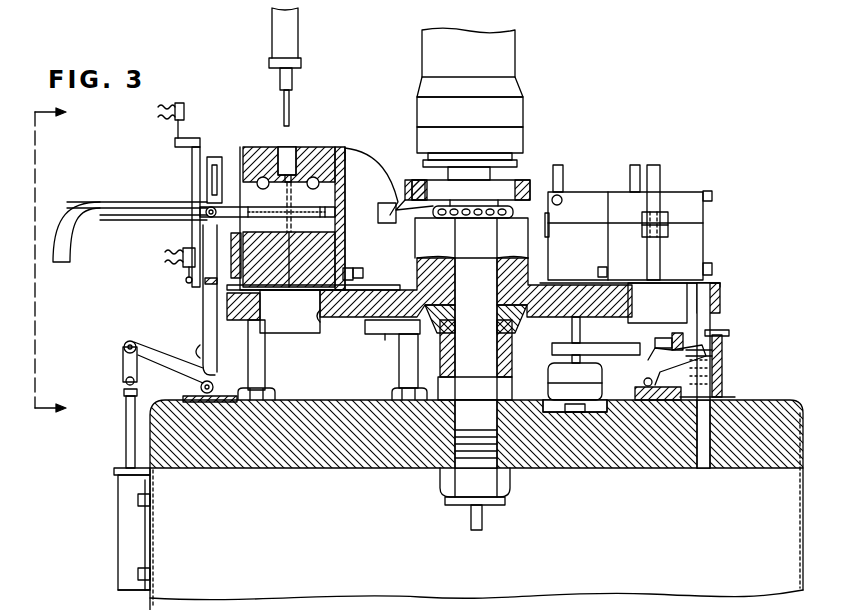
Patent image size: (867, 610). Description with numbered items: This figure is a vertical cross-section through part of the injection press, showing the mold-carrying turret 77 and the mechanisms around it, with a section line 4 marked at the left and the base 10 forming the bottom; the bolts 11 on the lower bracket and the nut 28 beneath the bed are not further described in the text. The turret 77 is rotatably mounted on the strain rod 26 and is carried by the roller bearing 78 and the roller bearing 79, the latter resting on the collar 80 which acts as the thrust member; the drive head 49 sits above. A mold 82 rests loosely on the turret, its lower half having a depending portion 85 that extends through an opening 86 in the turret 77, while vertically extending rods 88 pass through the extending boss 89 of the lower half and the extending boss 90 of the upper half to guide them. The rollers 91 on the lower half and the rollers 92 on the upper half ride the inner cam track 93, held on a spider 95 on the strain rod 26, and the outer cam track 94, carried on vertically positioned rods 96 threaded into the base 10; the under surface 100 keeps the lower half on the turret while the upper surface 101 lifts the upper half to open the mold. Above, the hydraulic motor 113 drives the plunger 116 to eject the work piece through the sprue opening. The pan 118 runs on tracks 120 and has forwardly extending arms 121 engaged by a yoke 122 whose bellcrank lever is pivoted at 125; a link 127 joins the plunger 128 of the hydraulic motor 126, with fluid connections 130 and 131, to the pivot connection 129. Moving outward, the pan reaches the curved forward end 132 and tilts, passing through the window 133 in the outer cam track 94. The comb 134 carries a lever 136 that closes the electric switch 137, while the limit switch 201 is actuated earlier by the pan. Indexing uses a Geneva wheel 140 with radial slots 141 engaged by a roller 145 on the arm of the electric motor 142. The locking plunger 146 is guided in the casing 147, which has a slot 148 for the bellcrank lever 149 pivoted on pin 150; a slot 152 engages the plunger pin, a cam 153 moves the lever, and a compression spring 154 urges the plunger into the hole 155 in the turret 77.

The section line 4- 4 is at (57, 261).
The base 10 is at (327, 408).
The bolts 11 is at (150, 508).
The strain rod 26 is at (512, 374).
The lower nut 28 is at (510, 485).
The motor 49 is at (515, 52).
The turret 77 is at (720, 298).
The roller bearing 78 is at (513, 212).
The roller bearing 79 is at (515, 318).
The collar 80 is at (512, 352).
The mold 82 is at (572, 244).
The depending portion 85 is at (293, 316).
The opening 86 is at (322, 324).
The vertically extending rods 88 is at (640, 173).
The extending boss 89 is at (668, 230).
The extending boss 90 is at (668, 216).
The rollers 91 is at (722, 265).
The rollers 92 is at (345, 148).
The inner cam track 93 is at (372, 203).
The outer cam track 94 is at (231, 244).
The spider 95 is at (405, 182).
The vertically positioned rods 96 is at (265, 362).
The under surface 100 is at (348, 268).
The upper surface 101 is at (242, 158).
The hydraulic motor 113 is at (298, 48).
The plunger 116 is at (289, 110).
The pan 118 is at (322, 212).
The tracks 120 is at (120, 202).
The forwardly extending arms 121 is at (243, 210).
The yoke 122 is at (210, 307).
The pivot 125 is at (213, 385).
The hydraulic motor 126 is at (118, 536).
The link 127 is at (123, 372).
The plunger 128 is at (126, 412).
The pivot connection 129 is at (140, 334).
The fluid connection 130 is at (114, 484).
The fluid connection 131 is at (114, 586).
The curved forward end 132 is at (66, 228).
The window 133 is at (220, 178).
The comb 134 is at (192, 183).
The lever 136 is at (175, 143).
The electric switch 137 is at (176, 103).
The Geneva wheel 140 is at (370, 321).
The radial slots 141 is at (385, 334).
The electric motor 142 is at (575, 387).
The roller 145 is at (580, 330).
The plunger 146 is at (710, 318).
The casing 147 is at (722, 338).
The slot 148 is at (672, 340).
The bellcrank lever 149 is at (655, 366).
The pin 150 is at (644, 382).
The slot 152 is at (712, 353).
The cam 153 is at (648, 336).
The compression spring 154 is at (712, 372).
The hole 155 is at (720, 285).
The limit switch 201 is at (182, 264).